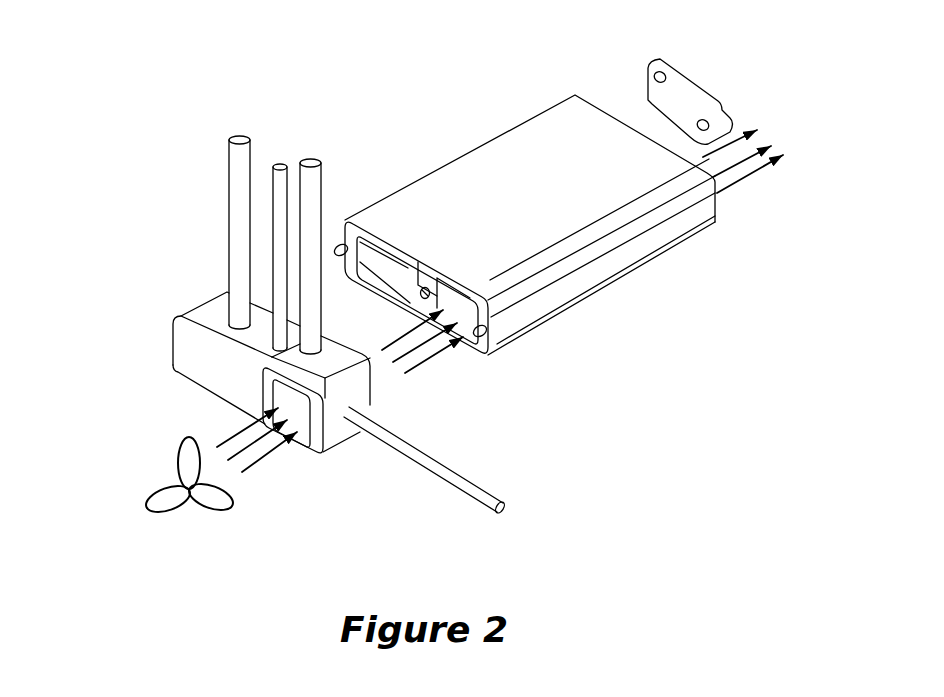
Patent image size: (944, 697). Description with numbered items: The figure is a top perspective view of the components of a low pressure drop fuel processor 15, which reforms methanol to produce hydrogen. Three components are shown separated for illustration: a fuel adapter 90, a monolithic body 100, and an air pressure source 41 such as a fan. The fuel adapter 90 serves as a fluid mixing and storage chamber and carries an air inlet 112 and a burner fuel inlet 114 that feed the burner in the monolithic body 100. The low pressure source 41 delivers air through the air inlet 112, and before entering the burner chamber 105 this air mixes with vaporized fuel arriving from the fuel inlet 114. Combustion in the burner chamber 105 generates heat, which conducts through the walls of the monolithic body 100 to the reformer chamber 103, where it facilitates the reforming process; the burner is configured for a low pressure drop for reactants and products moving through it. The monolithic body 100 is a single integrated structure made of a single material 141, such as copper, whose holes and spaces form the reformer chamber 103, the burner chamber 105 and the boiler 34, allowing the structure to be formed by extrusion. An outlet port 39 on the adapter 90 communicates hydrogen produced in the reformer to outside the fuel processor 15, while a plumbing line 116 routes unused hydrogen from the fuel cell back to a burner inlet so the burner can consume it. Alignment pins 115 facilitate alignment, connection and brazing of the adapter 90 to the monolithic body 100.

The low pressure drop fuel processor 15 is at (233, 57).
The outlet port 39 is at (239, 137).
The plumbing line 116 is at (314, 161).
The alignment pins 115 is at (342, 247).
The single material 141 is at (493, 170).
The reformer chamber 103 is at (385, 260).
The boiler 34 is at (420, 288).
The burner chamber 105 is at (453, 293).
The monolithic body 100 is at (590, 273).
The fuel adapter 90 is at (203, 358).
The air pressure source 41 is at (162, 507).
The air inlet 112 is at (308, 420).
The burner fuel inlet 114 is at (480, 483).